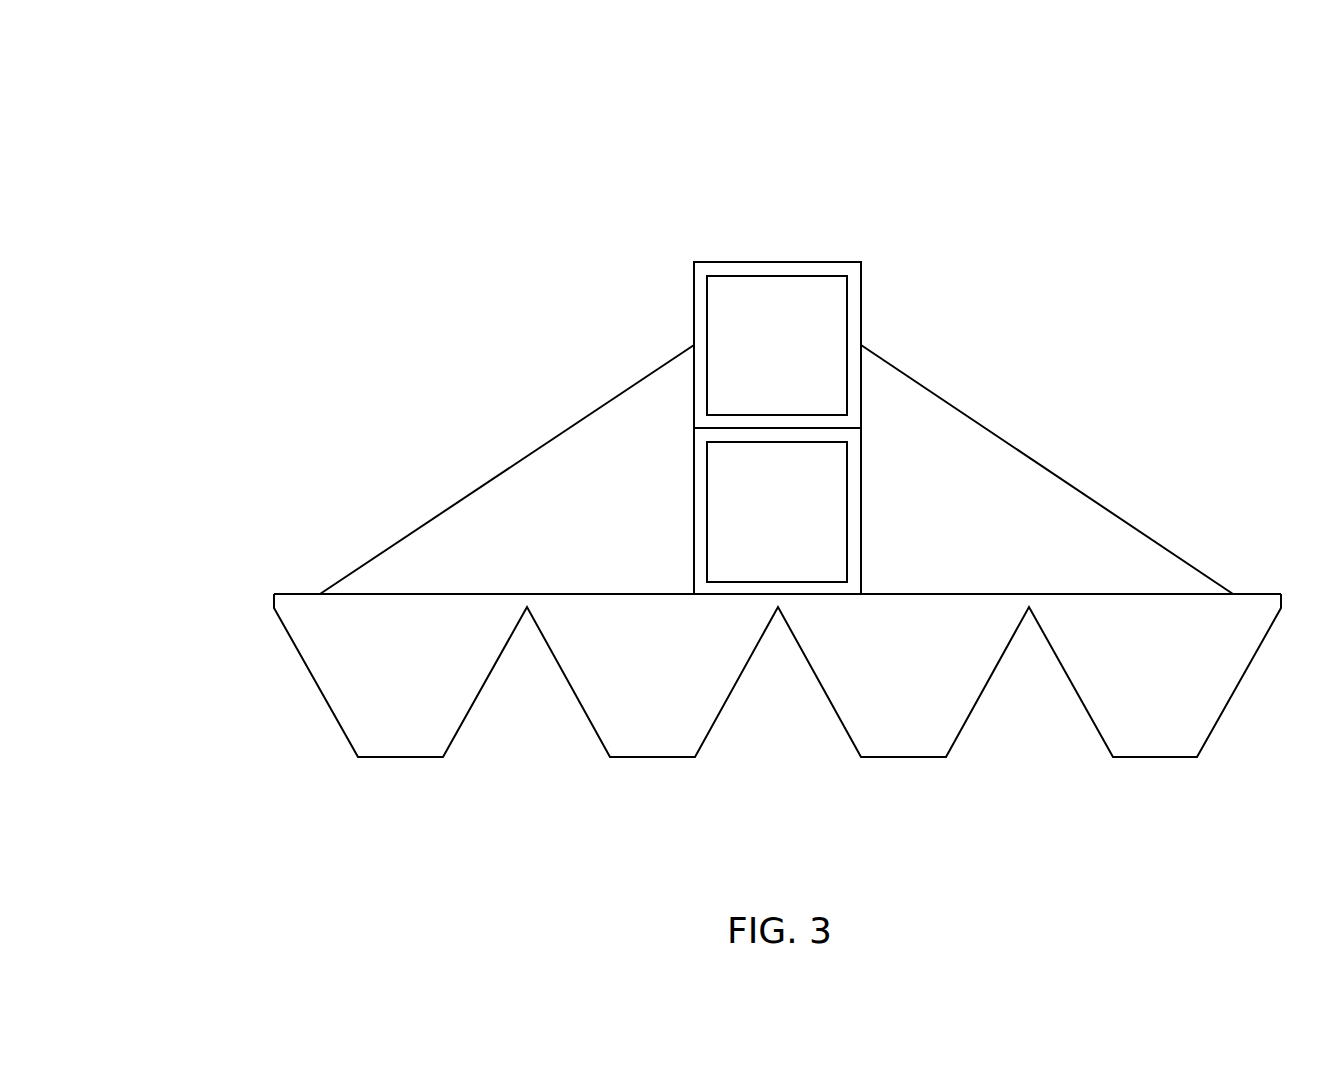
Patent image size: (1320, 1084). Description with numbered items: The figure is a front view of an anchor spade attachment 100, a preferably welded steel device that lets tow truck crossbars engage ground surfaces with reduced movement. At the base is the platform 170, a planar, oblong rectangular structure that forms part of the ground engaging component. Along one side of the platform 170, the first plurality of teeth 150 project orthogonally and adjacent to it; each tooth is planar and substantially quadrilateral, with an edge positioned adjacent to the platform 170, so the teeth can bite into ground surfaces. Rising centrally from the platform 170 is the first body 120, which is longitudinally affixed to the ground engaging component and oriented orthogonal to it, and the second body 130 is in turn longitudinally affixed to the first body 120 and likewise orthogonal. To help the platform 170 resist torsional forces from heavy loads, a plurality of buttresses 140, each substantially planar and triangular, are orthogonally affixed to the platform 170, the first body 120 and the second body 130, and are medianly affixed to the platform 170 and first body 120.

The anchor spade attachment 100 is at (220, 148).
The first body 120 is at (694, 505).
The second body 130 is at (776, 262).
The plurality of buttresses 140 is at (520, 461).
The first plurality of teeth 150 is at (398, 757).
The platform 170 is at (1069, 594).